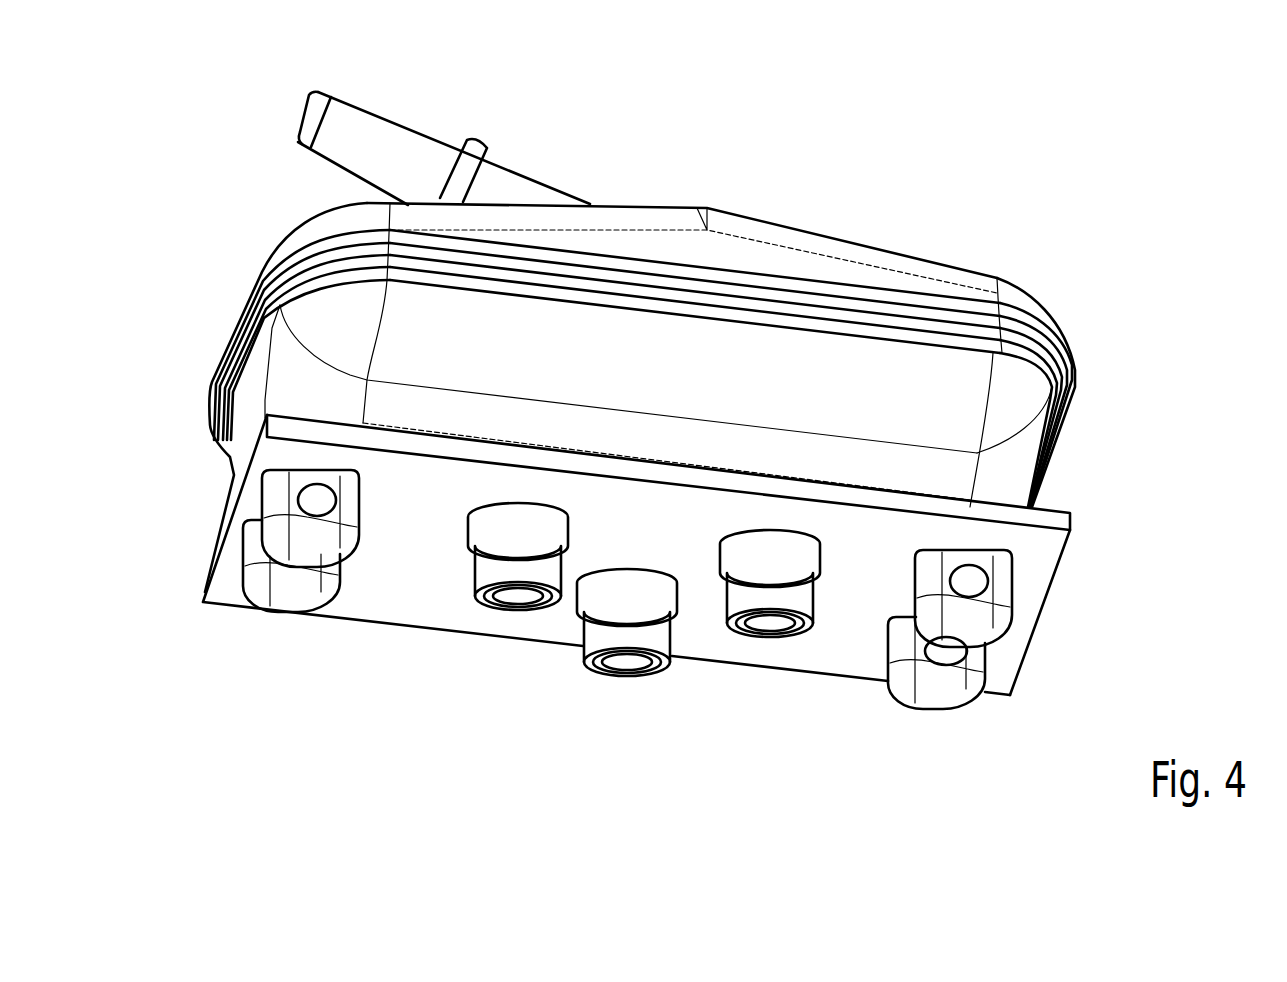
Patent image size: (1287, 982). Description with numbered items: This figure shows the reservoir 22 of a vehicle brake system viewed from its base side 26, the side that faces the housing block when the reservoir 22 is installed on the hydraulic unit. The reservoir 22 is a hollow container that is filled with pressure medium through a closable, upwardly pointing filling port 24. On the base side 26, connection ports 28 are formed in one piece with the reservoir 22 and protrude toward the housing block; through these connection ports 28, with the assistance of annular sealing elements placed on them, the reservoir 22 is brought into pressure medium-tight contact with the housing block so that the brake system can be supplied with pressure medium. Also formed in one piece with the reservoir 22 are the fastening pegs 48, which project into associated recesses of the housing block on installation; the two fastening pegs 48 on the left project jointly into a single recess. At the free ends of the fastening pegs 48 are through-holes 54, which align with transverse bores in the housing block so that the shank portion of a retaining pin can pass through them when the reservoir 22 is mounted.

The reservoir 22 is at (827, 190).
The filling port 24 is at (407, 140).
The base side 26 is at (403, 613).
The connection port 28 is at (518, 597).
The fastening peg 48 is at (258, 578).
The through-hole 54 is at (300, 498).